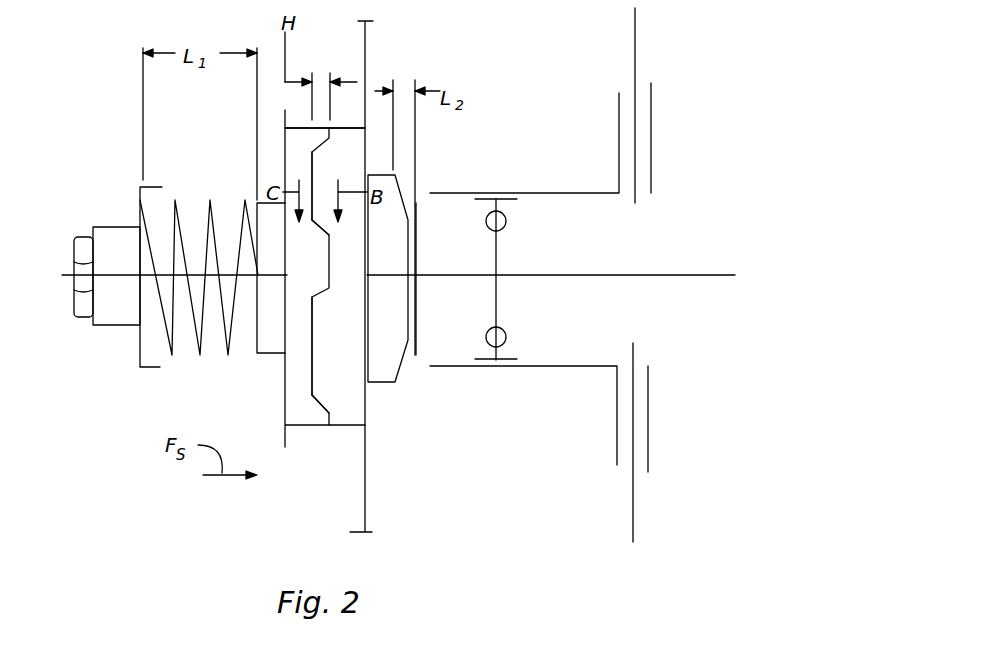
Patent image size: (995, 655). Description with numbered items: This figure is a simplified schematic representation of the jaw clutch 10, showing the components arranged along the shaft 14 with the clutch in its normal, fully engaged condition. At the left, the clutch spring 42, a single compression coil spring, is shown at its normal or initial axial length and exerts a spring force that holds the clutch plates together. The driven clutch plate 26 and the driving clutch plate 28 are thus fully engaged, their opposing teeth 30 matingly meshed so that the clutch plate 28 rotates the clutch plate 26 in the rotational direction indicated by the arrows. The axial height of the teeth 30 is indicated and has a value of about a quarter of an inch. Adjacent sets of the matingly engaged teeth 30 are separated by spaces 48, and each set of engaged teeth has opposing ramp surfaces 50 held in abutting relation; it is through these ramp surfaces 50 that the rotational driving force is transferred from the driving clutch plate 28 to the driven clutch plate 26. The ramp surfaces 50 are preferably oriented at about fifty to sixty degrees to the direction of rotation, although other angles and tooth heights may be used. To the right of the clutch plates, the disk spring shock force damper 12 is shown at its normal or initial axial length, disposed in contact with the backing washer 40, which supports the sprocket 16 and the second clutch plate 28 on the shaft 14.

The jaw clutch 10 is at (537, 89).
The disk spring shock force damper 12 is at (400, 367).
The shaft 14 is at (660, 273).
The sprocket 16 is at (374, 21).
The clutch plate 26 is at (307, 427).
The clutch plate 28 is at (340, 427).
The opposing teeth 30 is at (328, 132).
The backing washer 40 is at (395, 232).
The clutch spring 42 is at (199, 352).
The spaces 48 is at (323, 162).
The ramp surfaces 50 is at (320, 228).